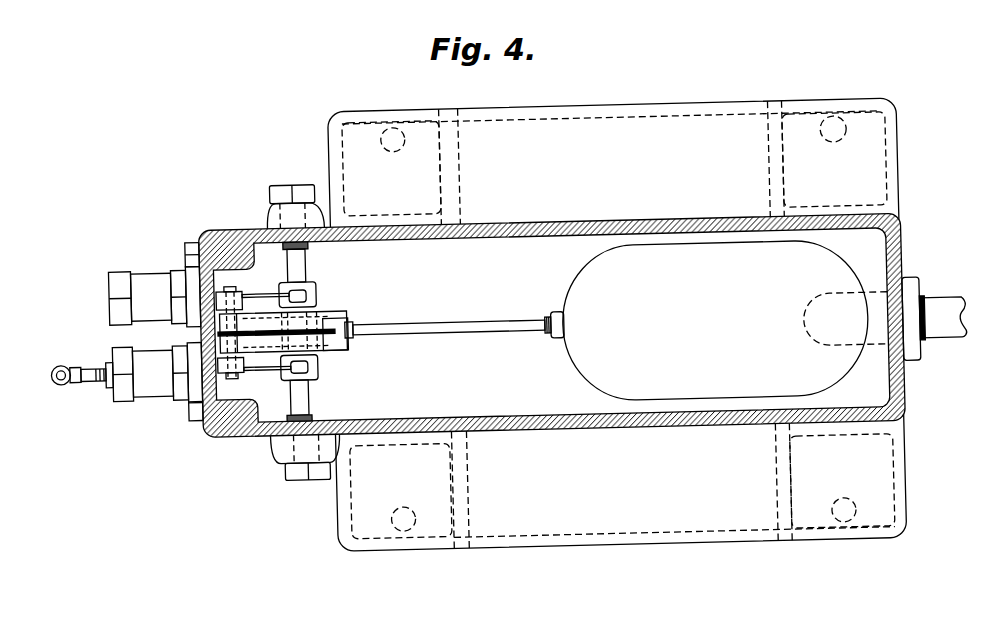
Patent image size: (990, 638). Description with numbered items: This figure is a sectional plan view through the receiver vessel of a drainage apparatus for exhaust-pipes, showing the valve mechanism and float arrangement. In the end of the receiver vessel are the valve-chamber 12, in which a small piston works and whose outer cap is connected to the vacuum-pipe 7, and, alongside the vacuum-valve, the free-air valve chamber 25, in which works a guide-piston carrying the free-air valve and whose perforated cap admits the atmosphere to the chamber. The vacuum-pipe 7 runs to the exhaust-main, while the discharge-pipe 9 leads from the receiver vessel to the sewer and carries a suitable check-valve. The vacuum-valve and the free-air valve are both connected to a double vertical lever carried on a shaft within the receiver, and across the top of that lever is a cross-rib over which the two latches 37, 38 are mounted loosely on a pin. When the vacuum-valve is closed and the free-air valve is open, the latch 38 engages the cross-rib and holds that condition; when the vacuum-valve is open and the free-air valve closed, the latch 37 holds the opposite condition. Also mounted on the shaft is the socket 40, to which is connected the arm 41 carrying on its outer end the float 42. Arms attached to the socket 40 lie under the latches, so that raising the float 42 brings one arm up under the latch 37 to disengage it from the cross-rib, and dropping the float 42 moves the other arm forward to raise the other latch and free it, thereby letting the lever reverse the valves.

The vacuum-pipe 7 is at (66, 356).
The discharge-pipe 9 is at (935, 318).
The valve-chamber 12 is at (141, 374).
The free-air valve chamber 25 is at (170, 248).
The latch 37 is at (333, 346).
The latch 38 is at (313, 314).
The socket 40 is at (326, 325).
The arm 41 is at (460, 327).
The float 42 is at (725, 320).